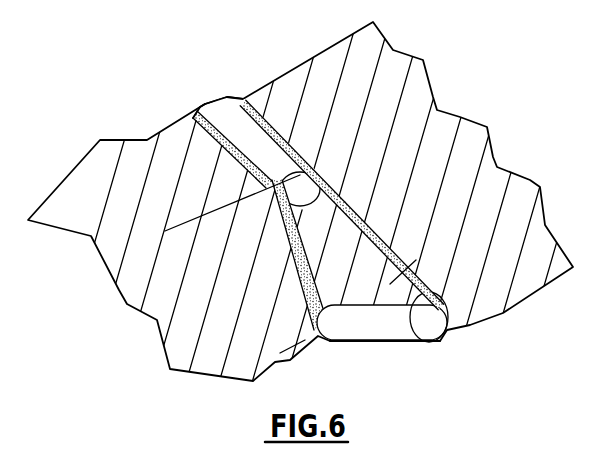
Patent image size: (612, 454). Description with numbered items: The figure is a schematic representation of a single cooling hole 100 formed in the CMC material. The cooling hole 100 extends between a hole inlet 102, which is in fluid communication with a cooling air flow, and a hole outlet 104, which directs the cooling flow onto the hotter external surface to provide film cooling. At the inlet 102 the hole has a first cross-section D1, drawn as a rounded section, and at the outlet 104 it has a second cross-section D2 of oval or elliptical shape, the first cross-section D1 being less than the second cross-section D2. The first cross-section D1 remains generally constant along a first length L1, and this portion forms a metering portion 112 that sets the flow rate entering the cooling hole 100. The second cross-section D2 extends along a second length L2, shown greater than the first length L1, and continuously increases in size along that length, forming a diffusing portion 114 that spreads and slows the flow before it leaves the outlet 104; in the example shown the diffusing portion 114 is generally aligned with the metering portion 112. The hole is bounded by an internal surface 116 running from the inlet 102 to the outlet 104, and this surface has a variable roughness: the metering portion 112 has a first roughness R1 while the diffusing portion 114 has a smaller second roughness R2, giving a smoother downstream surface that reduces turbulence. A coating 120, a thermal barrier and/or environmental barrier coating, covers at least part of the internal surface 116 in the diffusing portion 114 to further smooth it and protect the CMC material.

The cooling hole 100 is at (347, 236).
The hole inlet 102 is at (219, 97).
The hole outlet 104 is at (423, 341).
The metering portion 112 is at (276, 154).
The diffusing portion 114 is at (410, 268).
The internal surface 116 is at (249, 107).
The coating 120 is at (444, 328).
The first roughness R1 is at (210, 123).
The second roughness R2 is at (322, 288).
The first cross-section D1 is at (280, 163).
The second cross-section D2 is at (350, 267).
The first length L1 is at (170, 223).
The second length L2 is at (284, 342).